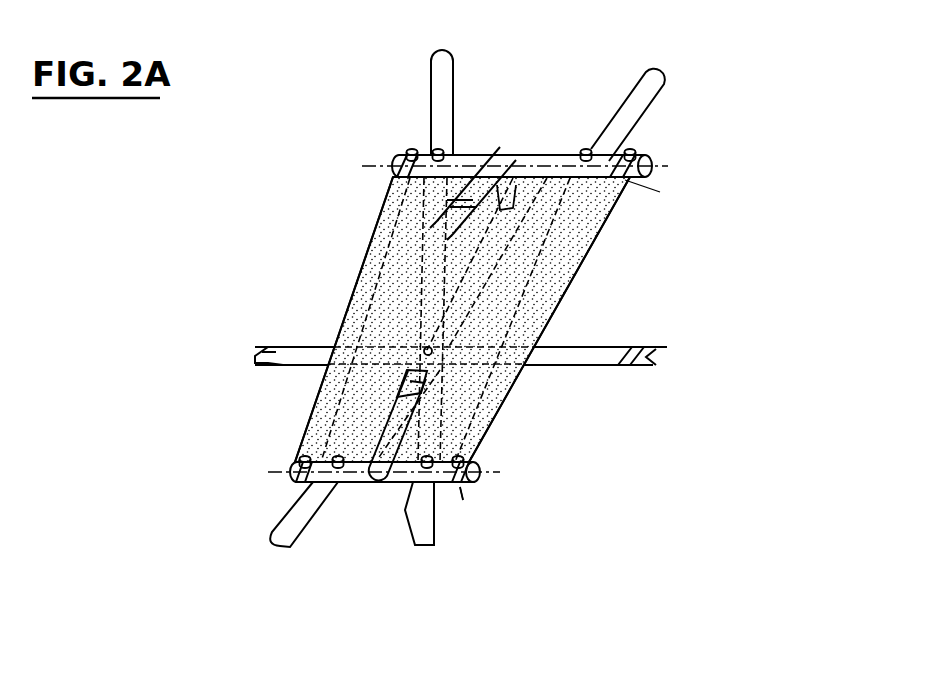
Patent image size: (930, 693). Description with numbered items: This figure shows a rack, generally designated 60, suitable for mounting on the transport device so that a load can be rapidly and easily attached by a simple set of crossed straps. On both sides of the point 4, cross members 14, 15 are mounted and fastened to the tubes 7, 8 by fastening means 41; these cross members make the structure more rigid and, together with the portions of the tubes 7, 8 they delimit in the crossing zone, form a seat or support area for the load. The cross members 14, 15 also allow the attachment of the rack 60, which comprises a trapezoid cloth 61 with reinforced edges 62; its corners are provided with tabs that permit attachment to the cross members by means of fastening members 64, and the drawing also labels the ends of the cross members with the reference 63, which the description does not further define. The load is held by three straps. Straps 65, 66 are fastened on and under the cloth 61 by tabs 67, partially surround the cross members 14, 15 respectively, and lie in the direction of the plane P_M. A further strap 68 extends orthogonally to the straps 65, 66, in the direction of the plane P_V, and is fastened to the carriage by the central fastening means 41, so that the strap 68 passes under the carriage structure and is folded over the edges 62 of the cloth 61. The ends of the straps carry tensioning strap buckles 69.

The point 4 is at (425, 349).
The tube 7 is at (285, 528).
The tube 8 is at (463, 500).
The cross member 14 is at (425, 515).
The cross member 15 is at (567, 155).
The fastening means 41 is at (430, 150).
The rack 60 is at (584, 280).
The trapezoid cloth 61 is at (498, 320).
The reinforced edge 62 is at (373, 235).
The tube bar 63 is at (392, 165).
The fastening member 64 is at (408, 152).
The strap 65 is at (373, 483).
The strap 66 is at (493, 153).
The tab 67 is at (540, 155).
The strap 68 is at (392, 331).
The tensioning strap buckle 69 is at (456, 54).